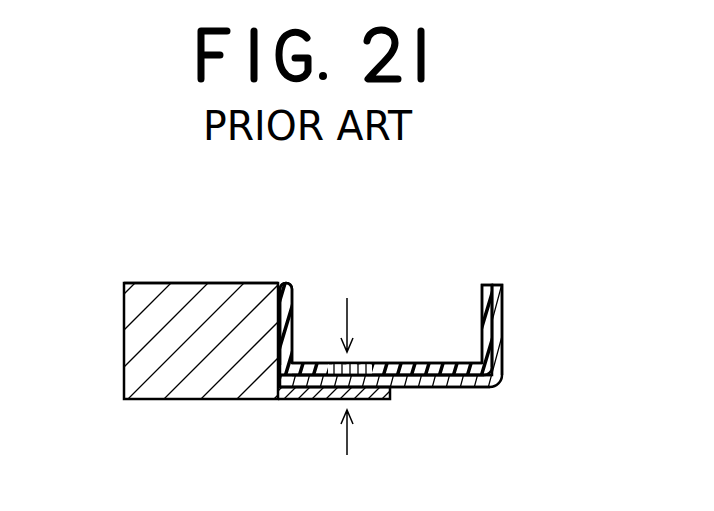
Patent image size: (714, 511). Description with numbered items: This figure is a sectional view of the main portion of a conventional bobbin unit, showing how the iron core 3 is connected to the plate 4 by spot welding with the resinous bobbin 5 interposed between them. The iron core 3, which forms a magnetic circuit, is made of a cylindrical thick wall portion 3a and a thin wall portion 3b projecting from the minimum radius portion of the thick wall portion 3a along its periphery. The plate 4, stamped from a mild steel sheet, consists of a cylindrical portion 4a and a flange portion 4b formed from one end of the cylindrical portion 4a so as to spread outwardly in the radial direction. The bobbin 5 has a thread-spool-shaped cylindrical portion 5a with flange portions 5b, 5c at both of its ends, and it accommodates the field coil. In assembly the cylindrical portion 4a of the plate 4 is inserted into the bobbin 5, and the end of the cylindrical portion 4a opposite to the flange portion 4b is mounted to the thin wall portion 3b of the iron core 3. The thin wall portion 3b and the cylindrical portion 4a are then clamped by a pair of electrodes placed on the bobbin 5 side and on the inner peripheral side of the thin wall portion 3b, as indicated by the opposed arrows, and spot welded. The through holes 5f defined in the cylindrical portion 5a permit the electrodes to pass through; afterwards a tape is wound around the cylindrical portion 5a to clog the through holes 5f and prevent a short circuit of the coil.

The iron core 3 is at (152, 283).
The thick wall portion 3a is at (210, 283).
The thin wall portion 3b is at (312, 401).
The plate 4 is at (468, 388).
The cylindrical portion 4a is at (425, 388).
The flange portion 4b is at (502, 337).
The bobbin 5 is at (408, 363).
The cylindrical portion 5a is at (450, 363).
The flange portion 5b is at (290, 283).
The flange portion 5c is at (490, 286).
The through holes 5f is at (370, 363).